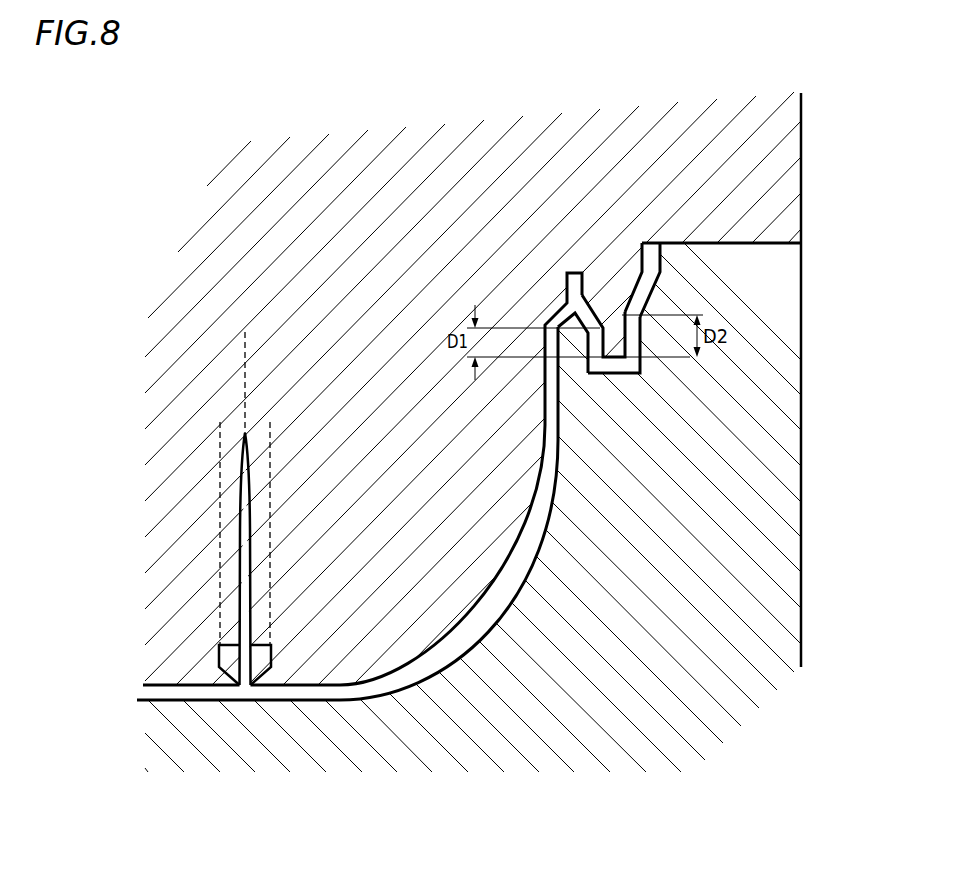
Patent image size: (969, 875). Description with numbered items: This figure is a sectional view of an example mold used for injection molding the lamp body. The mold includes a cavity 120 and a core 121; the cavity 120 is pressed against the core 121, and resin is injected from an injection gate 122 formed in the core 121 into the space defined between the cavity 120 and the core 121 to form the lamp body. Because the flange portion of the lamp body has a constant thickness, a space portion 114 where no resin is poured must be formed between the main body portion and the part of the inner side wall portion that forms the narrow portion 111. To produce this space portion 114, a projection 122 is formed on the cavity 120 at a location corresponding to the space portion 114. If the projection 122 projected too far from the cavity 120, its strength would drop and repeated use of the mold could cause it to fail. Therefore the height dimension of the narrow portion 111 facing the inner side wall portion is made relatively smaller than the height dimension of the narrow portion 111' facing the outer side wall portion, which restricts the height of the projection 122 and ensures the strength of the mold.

The core 121 is at (789, 175).
The cavity 120 is at (750, 450).
The projection 122 is at (567, 332).
The narrow portion 111 is at (606, 283).
The narrow portion 111' is at (642, 256).
The space portion 114 is at (577, 367).